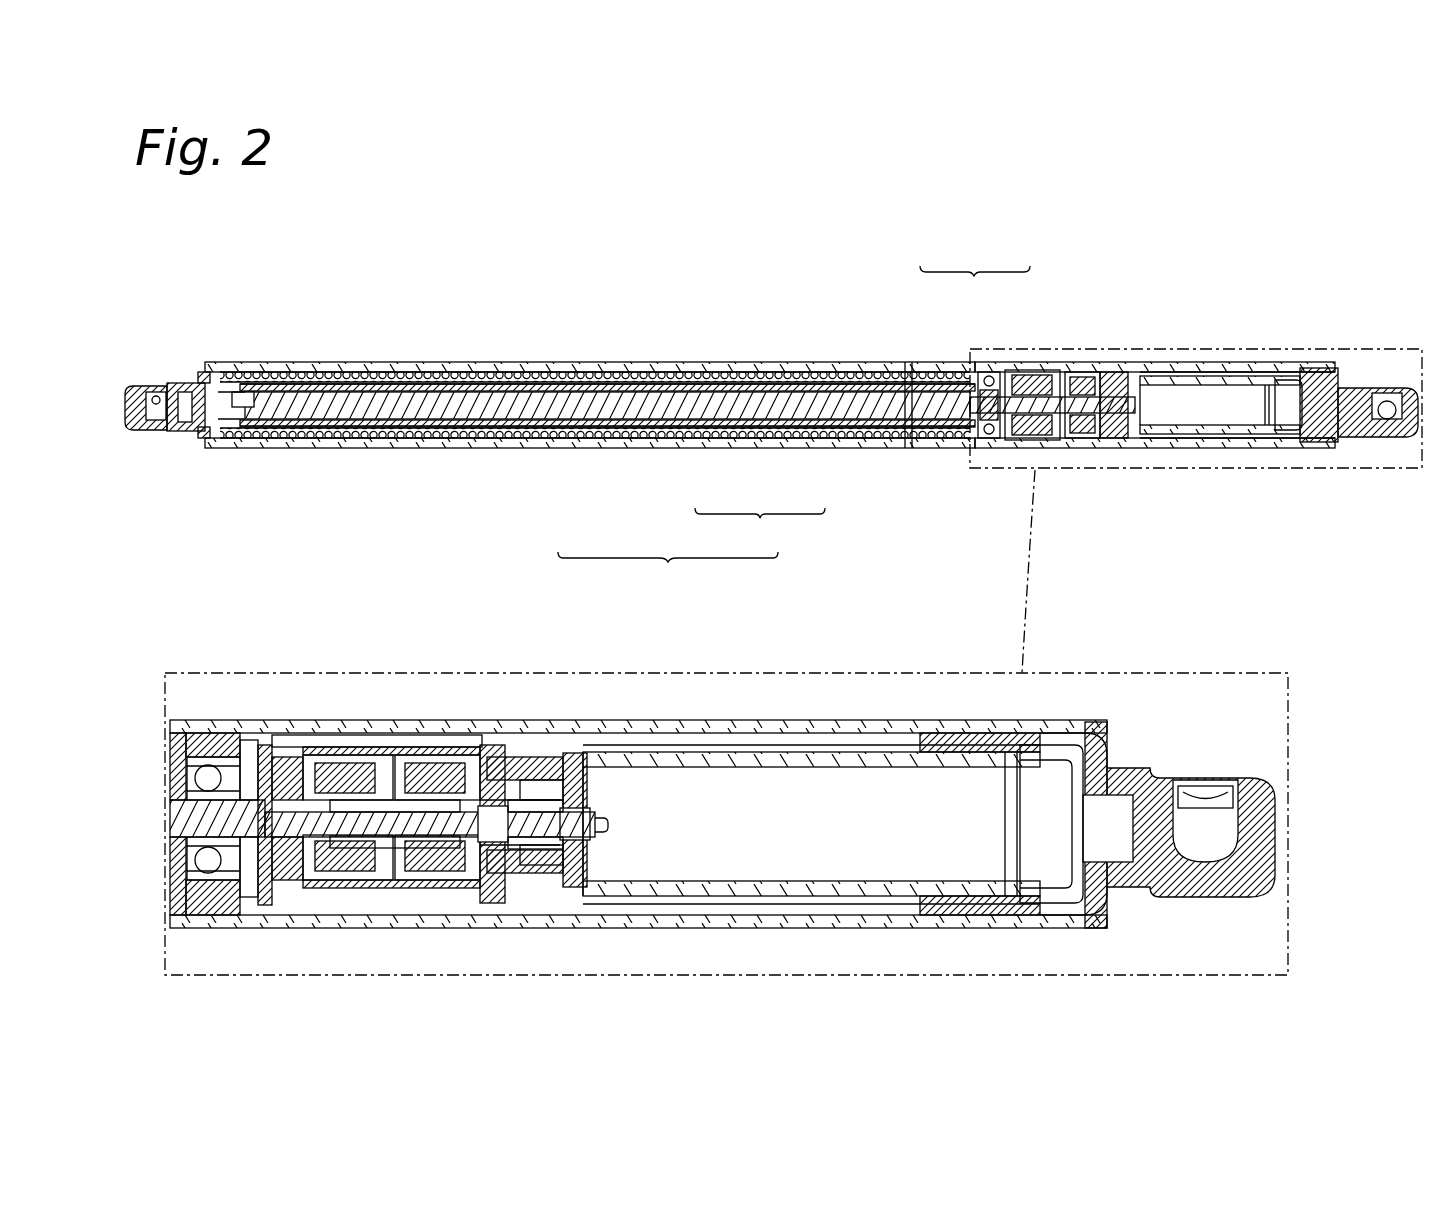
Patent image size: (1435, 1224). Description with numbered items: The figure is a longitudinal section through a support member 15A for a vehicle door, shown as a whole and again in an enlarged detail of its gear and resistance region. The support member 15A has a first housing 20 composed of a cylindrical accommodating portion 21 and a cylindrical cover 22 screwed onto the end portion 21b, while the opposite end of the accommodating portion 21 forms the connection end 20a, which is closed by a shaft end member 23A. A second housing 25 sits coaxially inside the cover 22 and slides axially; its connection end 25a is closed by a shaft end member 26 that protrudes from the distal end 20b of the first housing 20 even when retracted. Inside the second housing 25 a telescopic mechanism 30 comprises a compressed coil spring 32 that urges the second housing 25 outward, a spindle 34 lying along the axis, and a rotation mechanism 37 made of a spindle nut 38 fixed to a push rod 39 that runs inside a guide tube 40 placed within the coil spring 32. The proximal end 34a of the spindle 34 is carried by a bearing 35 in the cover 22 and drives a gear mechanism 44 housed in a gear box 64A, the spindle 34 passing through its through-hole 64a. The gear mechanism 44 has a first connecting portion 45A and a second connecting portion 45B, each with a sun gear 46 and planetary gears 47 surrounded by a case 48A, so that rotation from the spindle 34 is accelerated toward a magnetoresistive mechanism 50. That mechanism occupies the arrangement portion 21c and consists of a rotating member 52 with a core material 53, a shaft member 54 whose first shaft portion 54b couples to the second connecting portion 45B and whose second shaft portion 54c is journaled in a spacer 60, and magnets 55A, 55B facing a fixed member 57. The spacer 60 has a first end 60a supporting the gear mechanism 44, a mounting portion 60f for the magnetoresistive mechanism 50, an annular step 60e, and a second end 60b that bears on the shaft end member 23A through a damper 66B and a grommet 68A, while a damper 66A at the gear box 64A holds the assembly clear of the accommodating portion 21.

The support member 15A is at (240, 312).
The first housing 20 is at (975, 258).
The connection end 20a is at (1360, 348).
The distal end 20b is at (212, 433).
The accommodating portion 21 is at (1035, 348).
The end portion 21b is at (165, 718).
The arrangement portion 21c is at (1205, 348).
The cover 22 is at (905, 348).
The shaft end member 23A is at (1366, 440).
The second housing 25 is at (745, 362).
The connection end 25a is at (200, 372).
The shaft end member 26 is at (158, 431).
The telescopic mechanism 30 is at (668, 571).
The coil spring 32 is at (598, 446).
The spindle 34 is at (678, 447).
The proximal end 34a is at (998, 447).
The bearing 35 is at (968, 447).
The rotation mechanism 37 is at (760, 529).
The spindle nut 38 is at (903, 446).
The push rod 39 is at (765, 446).
The guide tube 40 is at (722, 446).
The gear mechanism 44 is at (1085, 447).
The first connecting portion 45A is at (243, 757).
The second connecting portion 45B is at (462, 882).
The sun gear 46 is at (465, 757).
The planetary gears 47 is at (407, 757).
The case 48A is at (431, 752).
The magnetoresistive mechanism 50 is at (1128, 372).
The rotating member 52 is at (1093, 447).
The core material 53 is at (505, 850).
The shaft member 54 is at (532, 810).
The first shaft portion 54b is at (405, 848).
The second shaft portion 54c is at (600, 823).
The magnets 55A is at (530, 870).
The magnets 55B is at (560, 782).
The fixed member 57 is at (515, 745).
The spacer 60 is at (1218, 437).
The first end 60a is at (478, 800).
The second end 60b is at (1017, 903).
The annular step 60e is at (930, 722).
The mounting portion 60f is at (586, 890).
The gear box 64A is at (367, 757).
The through-hole 64a is at (245, 880).
The damper 66A is at (277, 760).
The damper 66B is at (987, 740).
The grommet 68A is at (1074, 747).